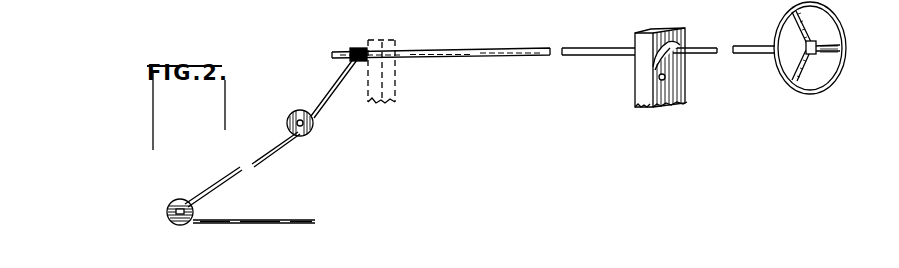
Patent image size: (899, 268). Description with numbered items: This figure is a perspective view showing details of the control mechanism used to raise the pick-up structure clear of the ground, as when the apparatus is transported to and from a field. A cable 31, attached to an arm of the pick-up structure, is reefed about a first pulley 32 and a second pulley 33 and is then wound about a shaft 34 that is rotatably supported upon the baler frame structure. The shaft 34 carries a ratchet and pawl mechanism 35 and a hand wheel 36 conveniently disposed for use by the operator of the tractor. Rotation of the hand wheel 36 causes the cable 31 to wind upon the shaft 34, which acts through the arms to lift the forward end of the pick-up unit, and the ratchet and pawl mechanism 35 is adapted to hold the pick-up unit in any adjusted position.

The cable 31 is at (268, 155).
The pulley 32 is at (194, 210).
The pulley 33 is at (313, 130).
The shaft 34 is at (487, 53).
The ratchet and pawl mechanism 35 is at (682, 40).
The hand wheel 36 is at (845, 48).